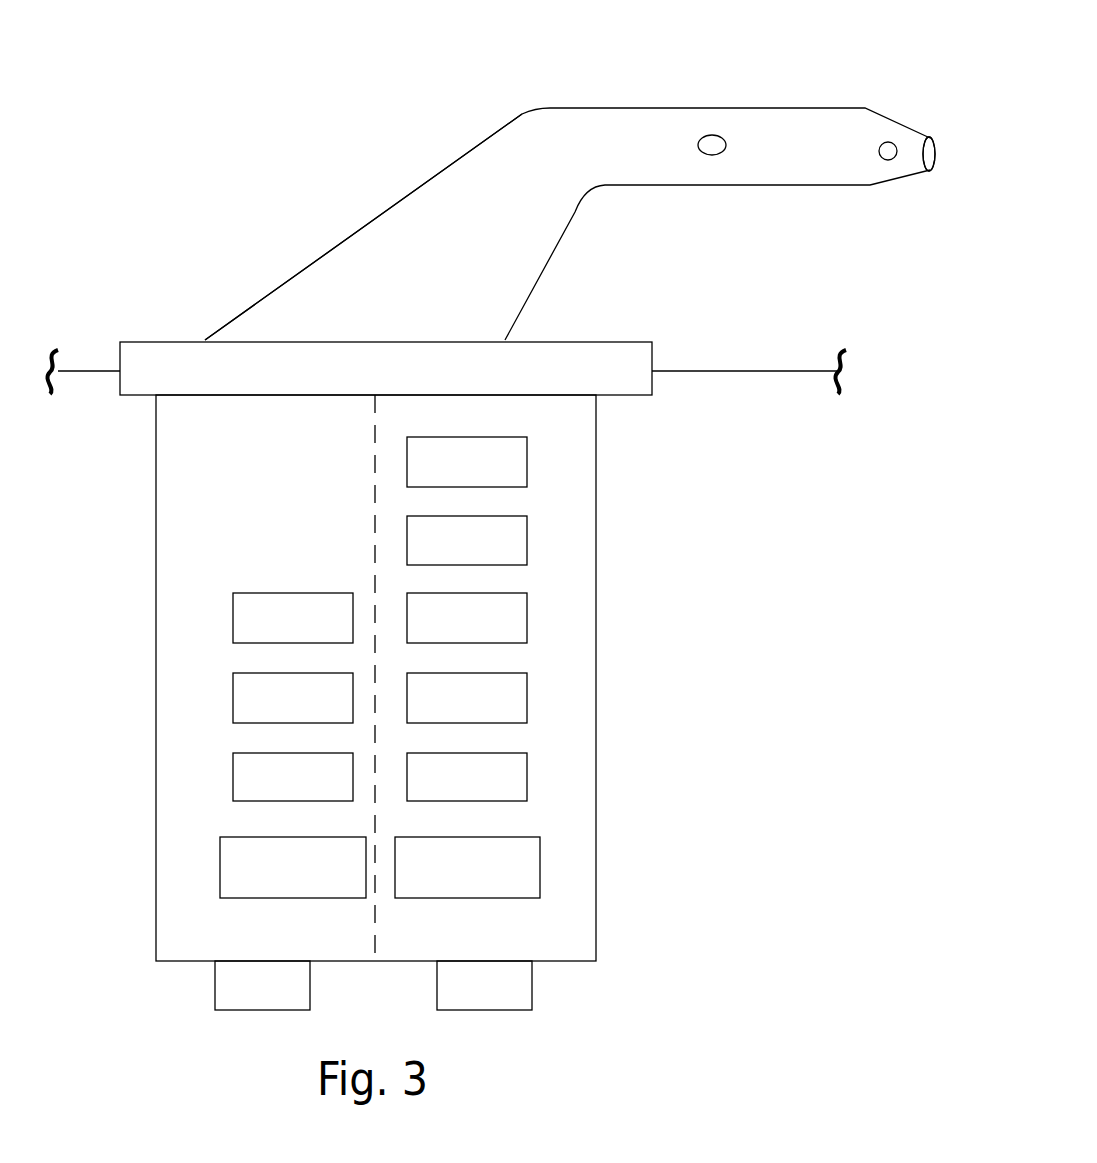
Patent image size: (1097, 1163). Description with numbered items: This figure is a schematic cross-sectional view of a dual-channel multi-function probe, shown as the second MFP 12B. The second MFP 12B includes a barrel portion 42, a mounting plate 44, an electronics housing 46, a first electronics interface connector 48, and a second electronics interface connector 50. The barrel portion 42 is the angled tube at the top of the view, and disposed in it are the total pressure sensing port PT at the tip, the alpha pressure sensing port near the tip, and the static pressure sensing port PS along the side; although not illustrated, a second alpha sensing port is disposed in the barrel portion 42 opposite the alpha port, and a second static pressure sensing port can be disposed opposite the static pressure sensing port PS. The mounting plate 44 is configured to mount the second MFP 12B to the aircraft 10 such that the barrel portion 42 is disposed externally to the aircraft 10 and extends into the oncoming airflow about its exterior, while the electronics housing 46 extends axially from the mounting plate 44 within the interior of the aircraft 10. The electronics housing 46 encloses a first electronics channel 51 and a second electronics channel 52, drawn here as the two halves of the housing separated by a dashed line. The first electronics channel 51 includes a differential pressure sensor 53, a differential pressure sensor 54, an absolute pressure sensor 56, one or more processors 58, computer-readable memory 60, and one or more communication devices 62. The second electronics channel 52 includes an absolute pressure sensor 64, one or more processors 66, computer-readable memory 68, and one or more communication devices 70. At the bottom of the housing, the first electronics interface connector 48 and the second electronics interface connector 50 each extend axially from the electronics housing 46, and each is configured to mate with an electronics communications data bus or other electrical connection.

The aircraft 10 is at (711, 368).
The second MFP 12B is at (389, 148).
The barrel portion 42 is at (697, 97).
The mounting plate 44 is at (155, 342).
The electronics housing 46 is at (156, 665).
The first electronics interface connector 48 is at (532, 983).
The second electronics interface connector 50 is at (215, 983).
The first electronics channel 51 is at (580, 502).
The second electronics channel 52 is at (189, 490).
The differential pressure sensor 53 is at (527, 458).
The differential pressure sensor 54 is at (527, 536).
The absolute pressure sensor 56 is at (527, 614).
The processors 58 is at (527, 694).
The computer-readable memory 60 is at (527, 773).
The communication devices 62 is at (540, 865).
The absolute pressure sensor 64 is at (233, 614).
The processors 66 is at (233, 694).
The computer-readable memory 68 is at (233, 773).
The communication devices 70 is at (220, 865).
The static pressure sensing port PS is at (713, 155).
The total pressure sensing port PT is at (937, 155).